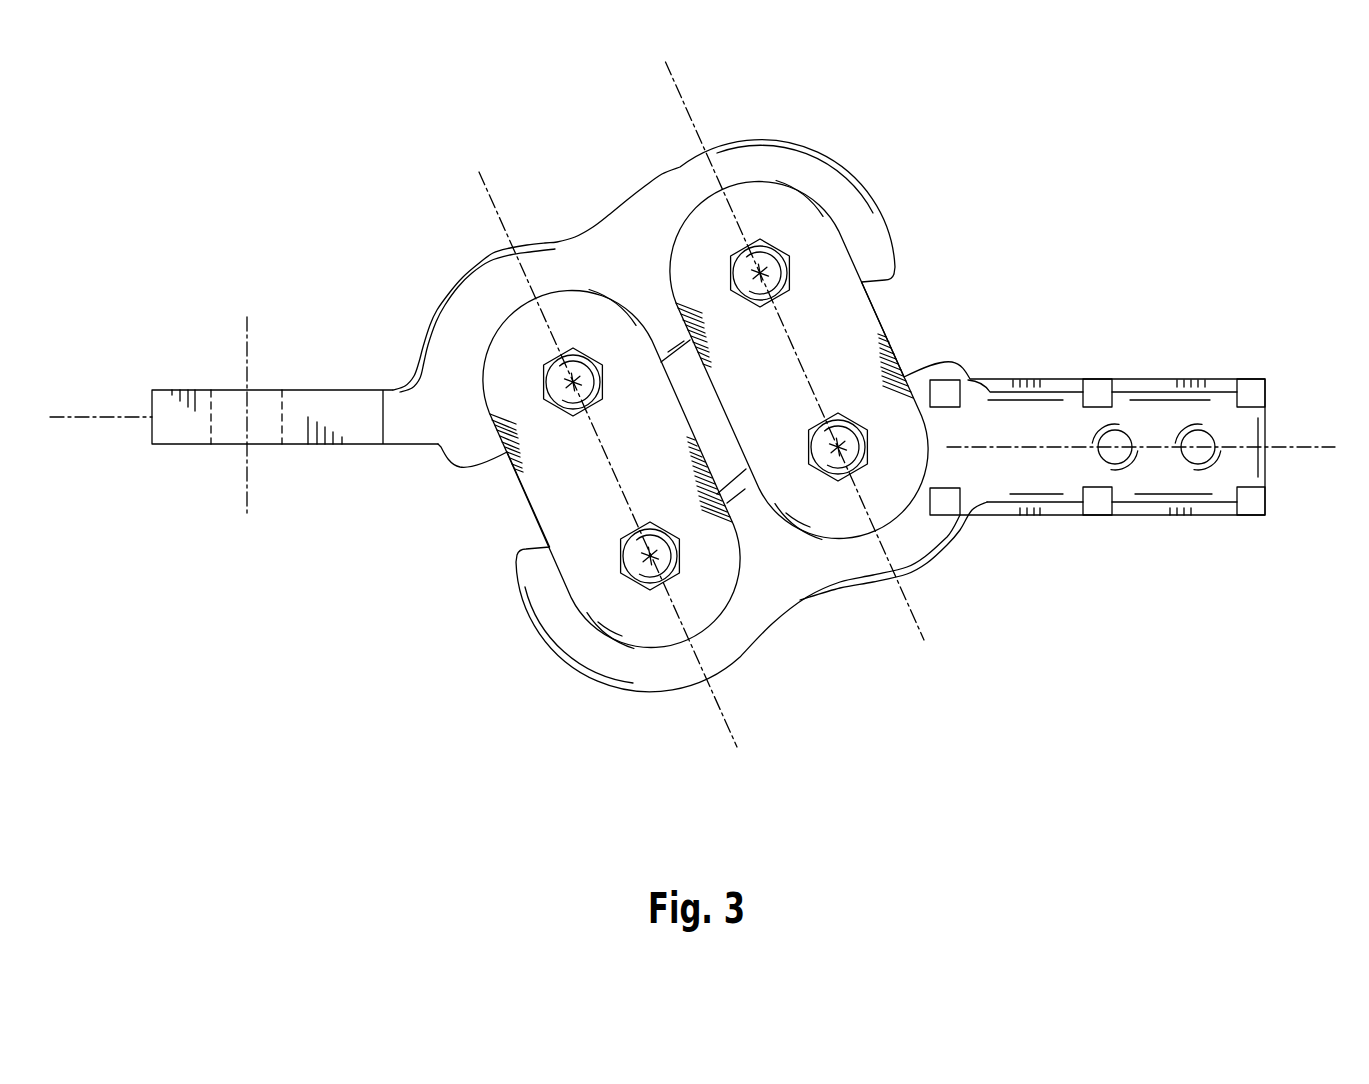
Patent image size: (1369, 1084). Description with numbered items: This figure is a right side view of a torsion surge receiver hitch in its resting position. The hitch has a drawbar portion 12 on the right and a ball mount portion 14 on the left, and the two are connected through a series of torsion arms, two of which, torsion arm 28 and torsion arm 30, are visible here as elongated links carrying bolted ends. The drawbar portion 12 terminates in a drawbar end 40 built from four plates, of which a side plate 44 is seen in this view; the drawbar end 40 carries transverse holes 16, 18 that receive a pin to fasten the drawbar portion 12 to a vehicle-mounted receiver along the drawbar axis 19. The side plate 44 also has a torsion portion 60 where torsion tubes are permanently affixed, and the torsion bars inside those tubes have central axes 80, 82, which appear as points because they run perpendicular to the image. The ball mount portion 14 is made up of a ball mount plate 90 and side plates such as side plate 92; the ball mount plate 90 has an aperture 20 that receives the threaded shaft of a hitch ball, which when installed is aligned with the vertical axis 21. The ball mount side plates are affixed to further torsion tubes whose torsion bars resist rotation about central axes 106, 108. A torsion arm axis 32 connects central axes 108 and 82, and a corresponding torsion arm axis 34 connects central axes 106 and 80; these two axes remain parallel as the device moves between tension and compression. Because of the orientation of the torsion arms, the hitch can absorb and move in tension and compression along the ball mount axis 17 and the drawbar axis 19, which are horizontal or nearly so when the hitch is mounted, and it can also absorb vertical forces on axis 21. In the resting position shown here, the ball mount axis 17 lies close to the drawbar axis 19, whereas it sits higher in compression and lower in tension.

The drawbar portion 12 is at (1097, 413).
The ball mount portion 14 is at (402, 255).
The transverse hole 16 is at (1125, 432).
The ball mount axis 17 is at (85, 420).
The transverse hole 18 is at (1205, 432).
The drawbar axis 19 is at (1340, 418).
The aperture 20 is at (212, 406).
The axis 21 is at (247, 515).
The torsion arm 28 is at (592, 509).
The torsion arm 30 is at (784, 400).
The torsion arm axis 32 is at (730, 735).
The torsion arm axis 34 is at (915, 625).
The drawbar end 40 is at (1198, 555).
The side plate 44 is at (1048, 475).
The torsion portion 60 is at (580, 685).
The central axis 80 is at (848, 462).
The central axis 82 is at (662, 572).
The ball mount plate 90 is at (316, 400).
The side plate 92 is at (593, 232).
The central axis 106 is at (766, 262).
The central axis 108 is at (555, 384).